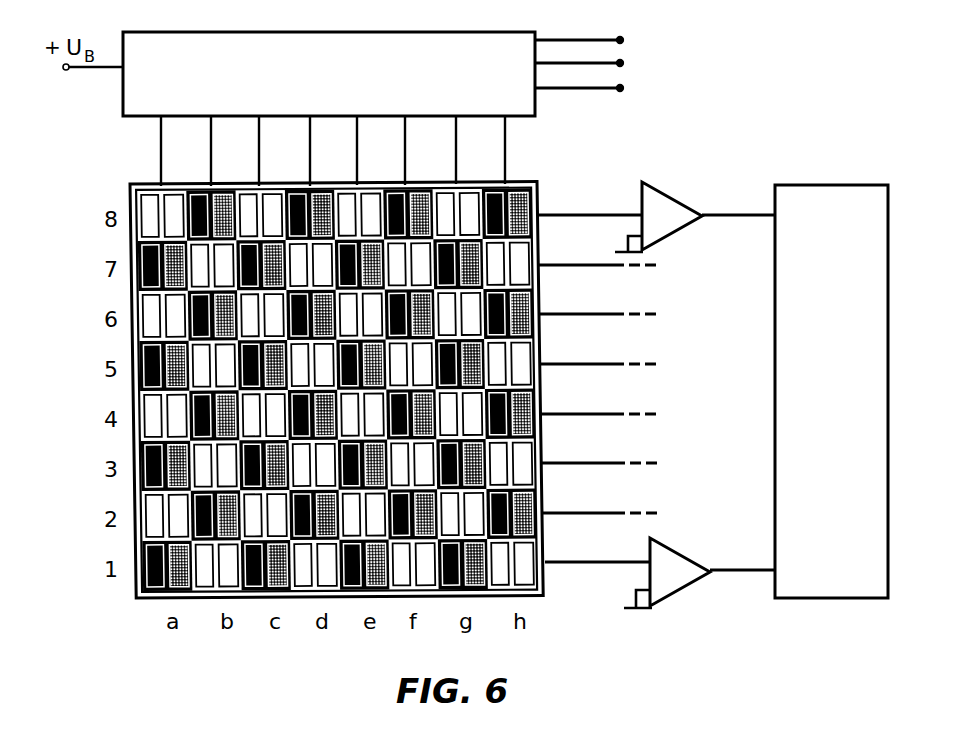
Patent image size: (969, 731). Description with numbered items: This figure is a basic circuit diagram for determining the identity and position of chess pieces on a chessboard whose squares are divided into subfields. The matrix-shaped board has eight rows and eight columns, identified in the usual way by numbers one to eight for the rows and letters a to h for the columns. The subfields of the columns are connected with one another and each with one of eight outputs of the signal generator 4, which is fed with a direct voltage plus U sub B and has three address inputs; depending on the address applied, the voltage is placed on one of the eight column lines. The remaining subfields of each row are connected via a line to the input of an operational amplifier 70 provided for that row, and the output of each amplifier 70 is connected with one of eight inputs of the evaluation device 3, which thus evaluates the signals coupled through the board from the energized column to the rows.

The signal generator 4 is at (352, 31).
The operational amplifier 70 is at (682, 206).
The evaluation device 3 is at (853, 583).